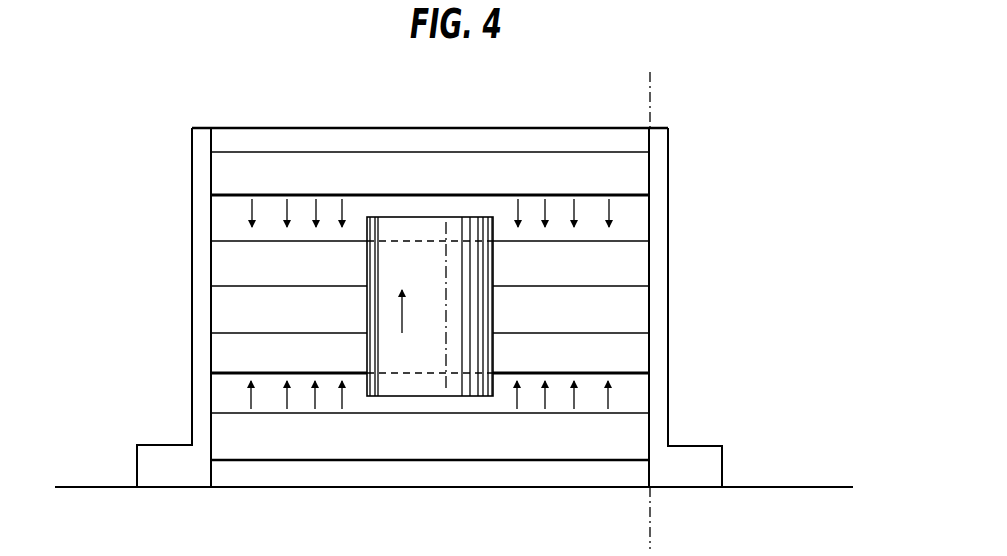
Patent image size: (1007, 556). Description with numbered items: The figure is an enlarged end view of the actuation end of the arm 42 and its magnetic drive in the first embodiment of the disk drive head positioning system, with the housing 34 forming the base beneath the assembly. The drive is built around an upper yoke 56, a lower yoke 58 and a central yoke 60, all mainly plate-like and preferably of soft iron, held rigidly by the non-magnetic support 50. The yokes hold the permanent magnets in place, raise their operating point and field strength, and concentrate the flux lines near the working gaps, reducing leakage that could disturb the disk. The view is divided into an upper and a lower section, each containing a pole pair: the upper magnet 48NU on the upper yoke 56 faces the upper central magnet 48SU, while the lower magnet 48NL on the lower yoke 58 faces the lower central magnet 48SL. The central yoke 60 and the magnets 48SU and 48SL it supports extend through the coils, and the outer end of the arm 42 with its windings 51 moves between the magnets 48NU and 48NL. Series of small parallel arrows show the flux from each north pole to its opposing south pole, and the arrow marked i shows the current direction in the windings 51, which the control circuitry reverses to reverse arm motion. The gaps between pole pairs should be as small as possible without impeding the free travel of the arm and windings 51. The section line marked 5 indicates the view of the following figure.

The housing 34 is at (108, 486).
The arm 42 is at (420, 211).
The upper magnet 48NU is at (297, 168).
The lower magnet 48NL is at (309, 445).
The upper central magnet 48SU is at (218, 265).
The lower central magnet 48SL is at (225, 362).
The non-magnetic support 50 is at (192, 179).
The windings 51 is at (417, 362).
The upper yoke 56 is at (558, 127).
The lower yoke 58 is at (545, 473).
The central yoke 60 is at (635, 311).
The section line for FIG. 5 is at (650, 72).